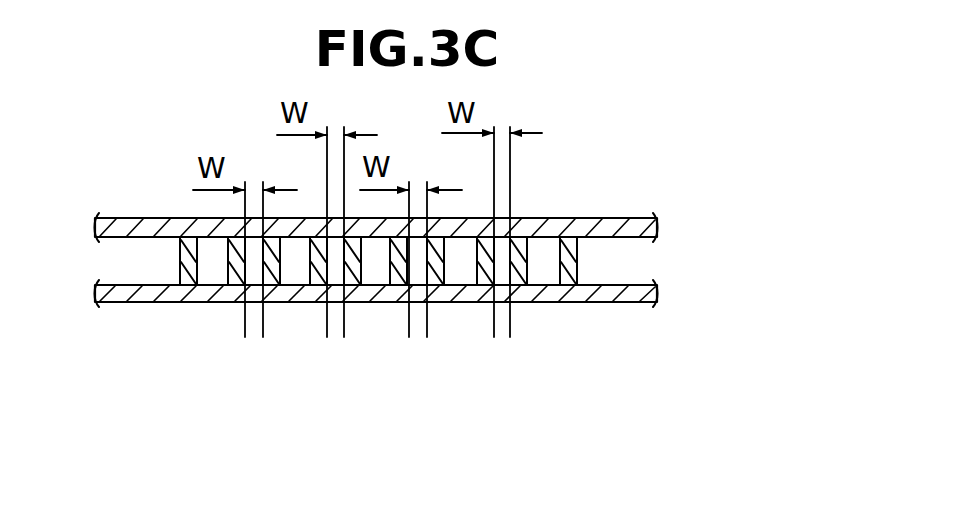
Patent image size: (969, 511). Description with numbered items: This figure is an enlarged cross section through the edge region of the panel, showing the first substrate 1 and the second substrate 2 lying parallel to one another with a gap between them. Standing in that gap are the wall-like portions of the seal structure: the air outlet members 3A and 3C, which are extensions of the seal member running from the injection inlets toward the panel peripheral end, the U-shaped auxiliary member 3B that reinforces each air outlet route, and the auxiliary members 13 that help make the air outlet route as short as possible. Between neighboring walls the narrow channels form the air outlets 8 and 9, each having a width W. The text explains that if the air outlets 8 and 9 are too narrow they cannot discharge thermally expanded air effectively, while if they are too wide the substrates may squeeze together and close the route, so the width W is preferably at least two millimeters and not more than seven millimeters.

The first substrate 1 is at (618, 300).
The second substrate 2 is at (617, 218).
The air outlet member 3A is at (513, 300).
The auxiliary member 3B is at (453, 300).
The air outlet member 3C is at (373, 300).
The air outlet 8 is at (246, 300).
The air outlet 9 is at (330, 303).
The auxiliary member 13 is at (575, 372).